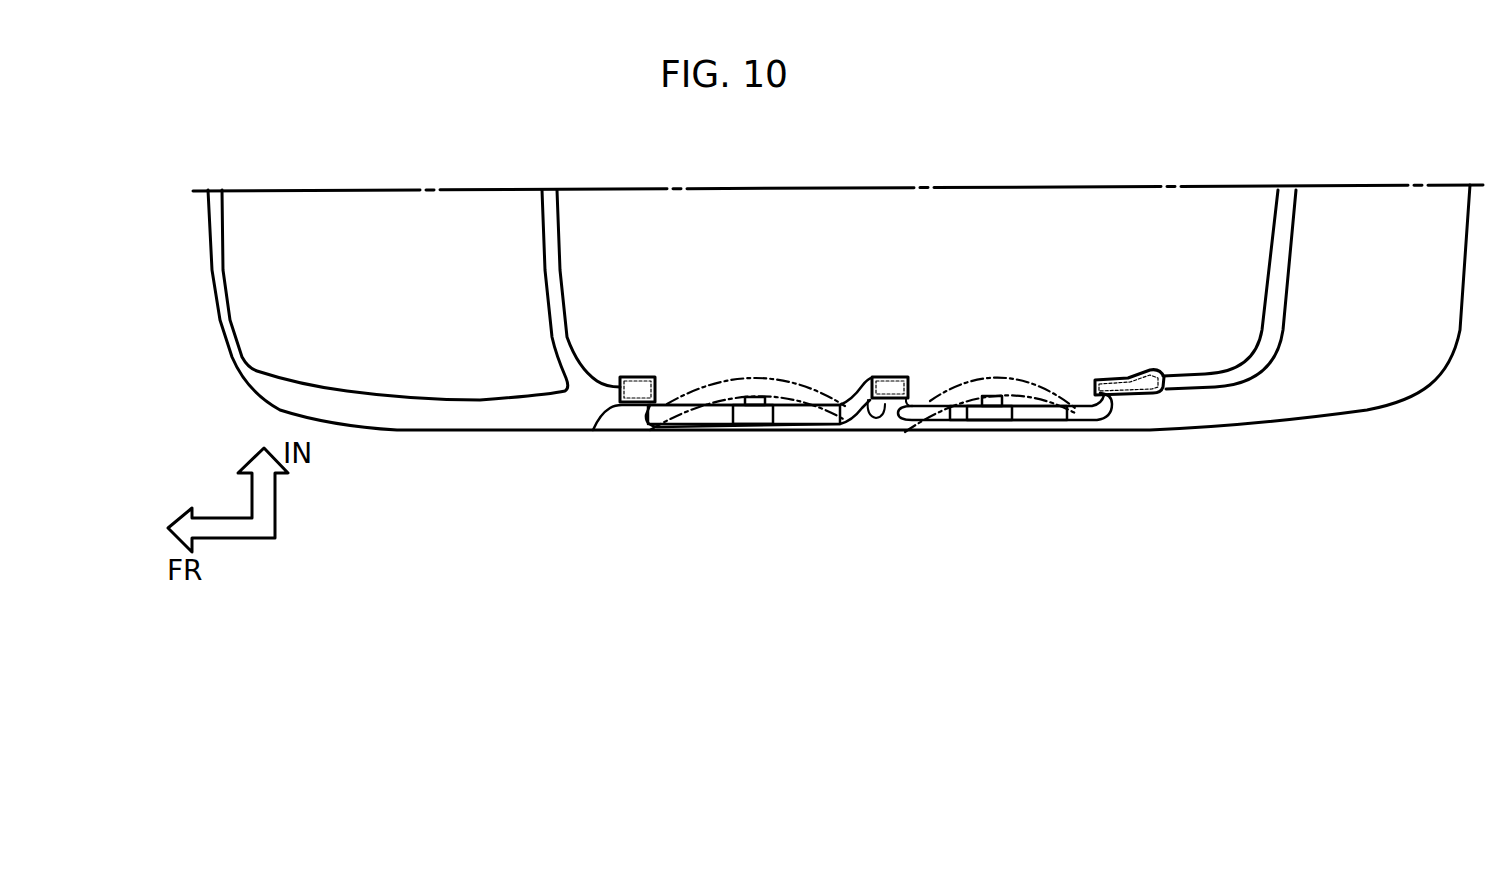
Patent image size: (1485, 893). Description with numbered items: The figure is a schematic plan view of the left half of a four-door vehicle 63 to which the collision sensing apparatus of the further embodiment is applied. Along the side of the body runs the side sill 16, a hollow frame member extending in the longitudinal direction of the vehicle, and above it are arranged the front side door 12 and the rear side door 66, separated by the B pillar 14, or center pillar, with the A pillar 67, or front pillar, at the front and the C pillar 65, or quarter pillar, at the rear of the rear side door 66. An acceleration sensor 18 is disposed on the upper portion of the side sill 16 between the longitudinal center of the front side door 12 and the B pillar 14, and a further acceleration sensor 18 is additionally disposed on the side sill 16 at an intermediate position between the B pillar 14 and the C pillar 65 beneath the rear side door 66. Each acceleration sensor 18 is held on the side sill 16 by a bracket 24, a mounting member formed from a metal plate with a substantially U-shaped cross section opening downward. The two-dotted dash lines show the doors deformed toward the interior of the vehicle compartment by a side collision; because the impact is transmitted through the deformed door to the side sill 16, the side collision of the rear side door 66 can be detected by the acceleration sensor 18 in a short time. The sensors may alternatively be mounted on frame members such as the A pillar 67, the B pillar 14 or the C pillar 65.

The front side door 12 is at (700, 385).
The B pillar 14 is at (866, 380).
The side sill 16 is at (803, 417).
The acceleration sensor 18 is at (749, 396).
The bracket 24 is at (743, 418).
The four-door vehicle 63 is at (507, 437).
The C pillar 65 is at (1127, 400).
The rear side door 66 is at (1048, 388).
The A pillar 67 is at (614, 386).